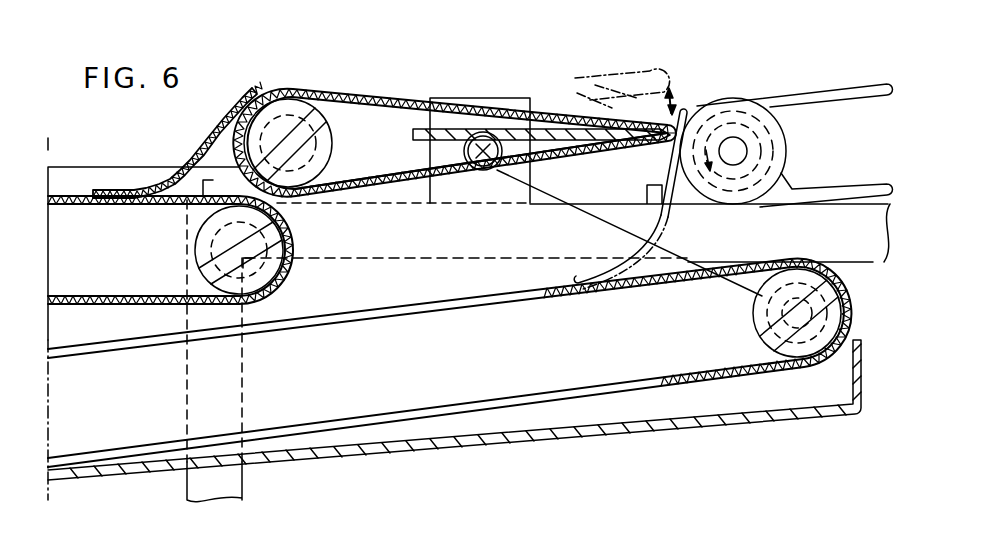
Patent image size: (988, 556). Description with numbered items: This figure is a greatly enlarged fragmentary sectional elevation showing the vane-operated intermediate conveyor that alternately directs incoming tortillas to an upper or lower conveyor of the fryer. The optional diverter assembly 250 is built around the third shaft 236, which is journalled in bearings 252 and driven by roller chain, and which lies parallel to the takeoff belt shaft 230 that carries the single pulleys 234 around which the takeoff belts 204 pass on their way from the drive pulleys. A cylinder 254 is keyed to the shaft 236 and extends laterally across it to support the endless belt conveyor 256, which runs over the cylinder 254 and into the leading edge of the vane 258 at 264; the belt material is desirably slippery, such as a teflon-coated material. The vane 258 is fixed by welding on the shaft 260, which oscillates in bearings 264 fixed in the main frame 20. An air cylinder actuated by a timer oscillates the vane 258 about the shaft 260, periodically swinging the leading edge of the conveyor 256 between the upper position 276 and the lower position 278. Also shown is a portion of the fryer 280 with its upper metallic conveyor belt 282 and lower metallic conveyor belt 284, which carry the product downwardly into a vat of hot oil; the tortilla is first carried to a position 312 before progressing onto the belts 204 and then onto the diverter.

The main frame 20 is at (874, 266).
The takeoff belts 204 is at (856, 84).
The takeoff belt shaft 230 is at (745, 158).
The single pulleys 234 is at (763, 108).
The third shaft 236 is at (337, 118).
The diverter assembly 250 is at (412, 87).
The bearings 252 is at (345, 160).
The cylinder 254 is at (308, 98).
The endless belt conveyor 256 is at (375, 93).
The vane 258 is at (498, 130).
The shaft 260 is at (485, 170).
The bearings 264 is at (527, 187).
The upper position 276 is at (669, 78).
The lower position 278 is at (683, 110).
The fryer 280 is at (513, 442).
The upper metallic conveyor belt 282 is at (68, 193).
The lower metallic conveyor belt 284 is at (497, 294).
The position 312 is at (659, 224).